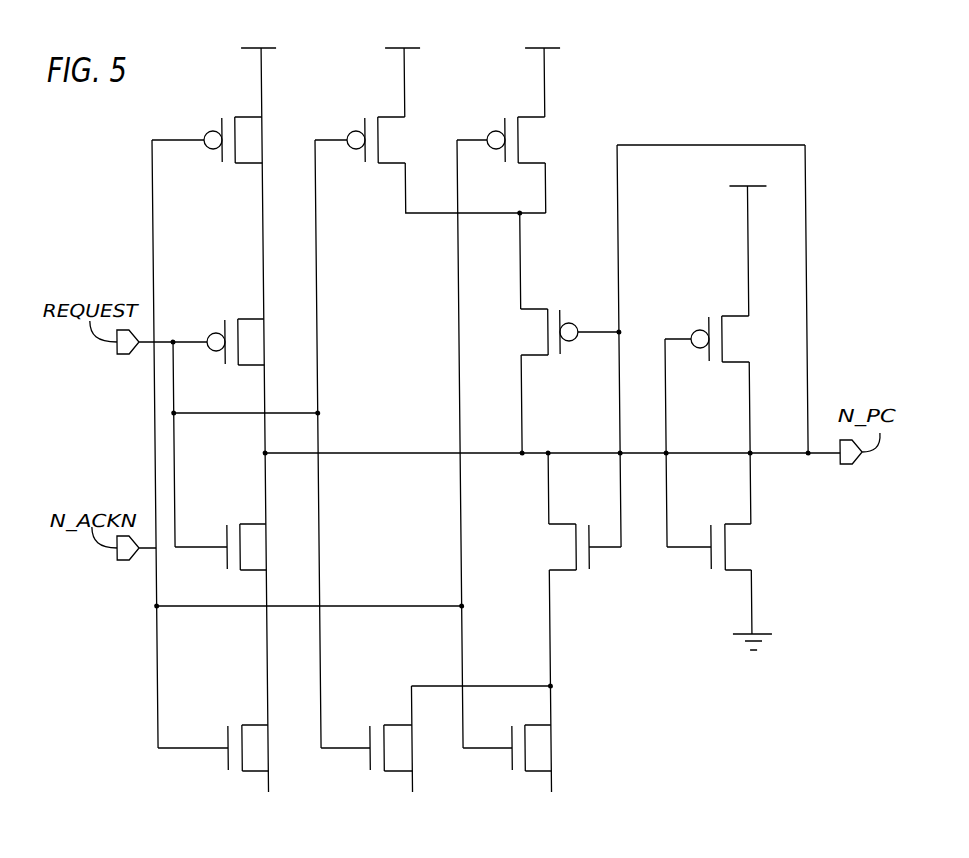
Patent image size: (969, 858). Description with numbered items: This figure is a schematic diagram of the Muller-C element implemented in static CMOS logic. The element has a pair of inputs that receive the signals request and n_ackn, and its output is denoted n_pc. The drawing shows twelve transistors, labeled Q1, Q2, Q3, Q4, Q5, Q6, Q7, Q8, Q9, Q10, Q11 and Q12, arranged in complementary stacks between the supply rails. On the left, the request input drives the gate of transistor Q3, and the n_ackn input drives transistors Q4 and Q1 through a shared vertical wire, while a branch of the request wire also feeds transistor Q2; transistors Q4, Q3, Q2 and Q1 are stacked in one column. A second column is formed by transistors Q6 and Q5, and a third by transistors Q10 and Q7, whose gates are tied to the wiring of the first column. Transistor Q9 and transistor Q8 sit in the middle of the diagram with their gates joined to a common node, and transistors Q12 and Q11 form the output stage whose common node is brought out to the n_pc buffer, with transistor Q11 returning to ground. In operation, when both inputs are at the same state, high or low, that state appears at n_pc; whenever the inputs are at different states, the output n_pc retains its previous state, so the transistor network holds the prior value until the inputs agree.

The NMOS transistor Q1 is at (223, 748).
The NMOS transistor Q2 is at (229, 547).
The PMOS transistor Q3 is at (242, 342).
The PMOS transistor Q4 is at (214, 140).
The NMOS transistor Q5 is at (376, 748).
The PMOS transistor Q6 is at (367, 140).
The NMOS transistor Q7 is at (517, 748).
The NMOS transistor Q8 is at (582, 547).
The PMOS transistor Q9 is at (565, 332).
The PMOS transistor Q10 is at (514, 140).
The NMOS transistor Q11 is at (724, 547).
The PMOS transistor Q12 is at (724, 339).